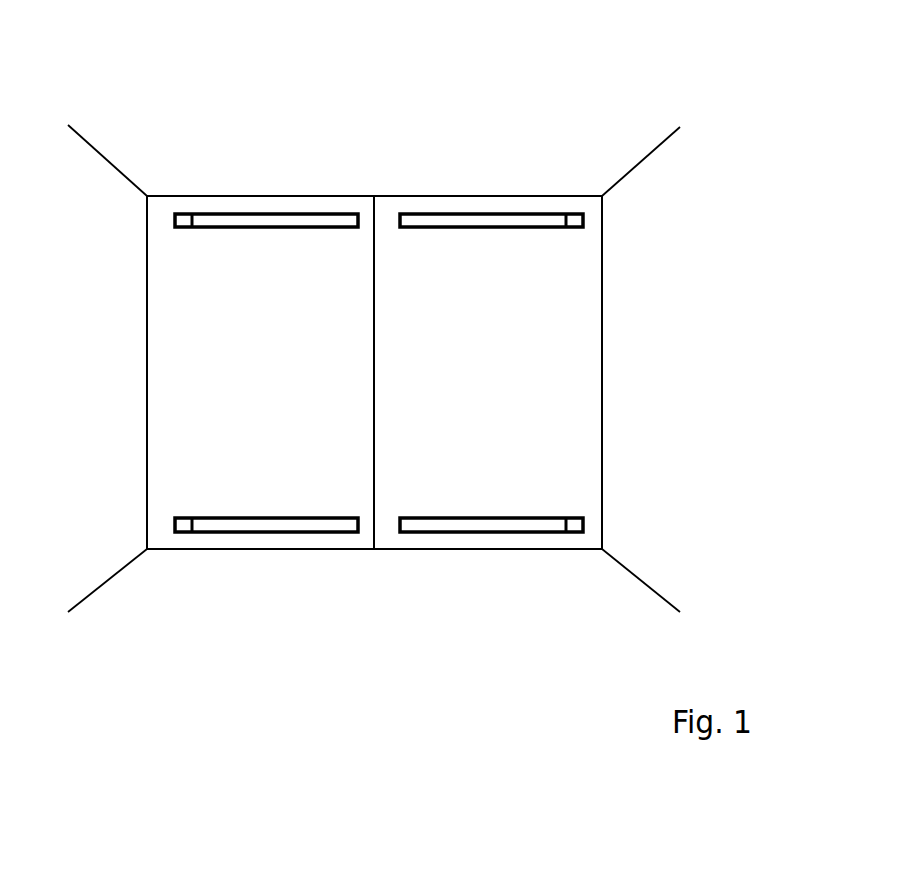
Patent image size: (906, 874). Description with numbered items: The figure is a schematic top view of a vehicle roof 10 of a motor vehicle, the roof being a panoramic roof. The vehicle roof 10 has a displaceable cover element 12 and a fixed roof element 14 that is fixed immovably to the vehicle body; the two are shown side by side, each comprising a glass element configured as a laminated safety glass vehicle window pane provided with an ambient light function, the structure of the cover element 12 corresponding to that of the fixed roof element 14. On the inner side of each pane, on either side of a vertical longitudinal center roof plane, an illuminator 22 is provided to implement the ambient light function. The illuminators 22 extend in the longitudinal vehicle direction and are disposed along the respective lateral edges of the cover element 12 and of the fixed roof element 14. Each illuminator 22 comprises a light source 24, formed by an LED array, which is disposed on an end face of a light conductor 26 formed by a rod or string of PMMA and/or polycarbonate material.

The vehicle roof 10 is at (374, 335).
The cover element 12 is at (238, 410).
The fixed roof element 14 is at (459, 410).
The illuminator 22 is at (224, 206).
The light source 24 is at (186, 218).
The light conductor 26 is at (278, 220).